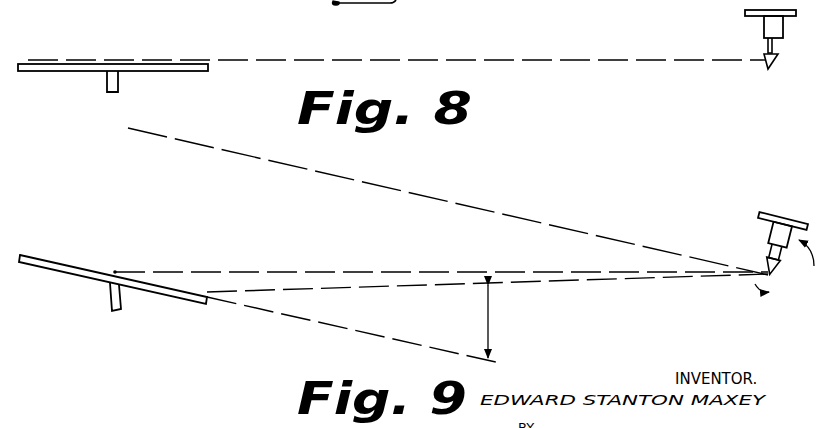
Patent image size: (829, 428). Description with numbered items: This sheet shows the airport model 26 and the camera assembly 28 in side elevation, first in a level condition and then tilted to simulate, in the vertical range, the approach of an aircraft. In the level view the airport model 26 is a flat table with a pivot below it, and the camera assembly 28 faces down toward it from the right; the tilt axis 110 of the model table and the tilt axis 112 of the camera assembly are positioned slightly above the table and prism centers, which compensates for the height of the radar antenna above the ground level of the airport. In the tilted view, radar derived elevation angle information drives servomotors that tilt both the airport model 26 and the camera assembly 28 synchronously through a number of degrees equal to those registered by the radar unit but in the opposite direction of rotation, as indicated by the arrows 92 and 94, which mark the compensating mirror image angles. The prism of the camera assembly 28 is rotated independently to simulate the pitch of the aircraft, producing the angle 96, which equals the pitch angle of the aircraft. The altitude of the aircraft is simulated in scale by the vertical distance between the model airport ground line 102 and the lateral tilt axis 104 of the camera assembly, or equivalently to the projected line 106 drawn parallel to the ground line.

In FIG. 8, the airport model 26 is at (75, 43).
In FIG. 9, the airport model 26 is at (84, 250).
In FIG. 8, the camera assembly 28 is at (737, 18).
In FIG. 9, the camera assembly 28 is at (758, 231).
In FIG. 8, the tilt axis of model table 110 is at (111, 63).
In FIG. 8, the tilt axis of camera assembly 112 is at (778, 58).
In FIG. 9, the arrow indicating tilt of airport model 92 is at (201, 308).
In FIG. 9, the arrow indicating tilt of camera assembly 94 is at (806, 267).
In FIG. 9, the angle 96 is at (490, 331).
In FIG. 9, the model airport ground line 102 is at (388, 342).
In FIG. 9, the lateral tilt axis of the camera assembly 104 is at (767, 271).
In FIG. 9, the projected line parallel to the ground line 106 is at (570, 227).